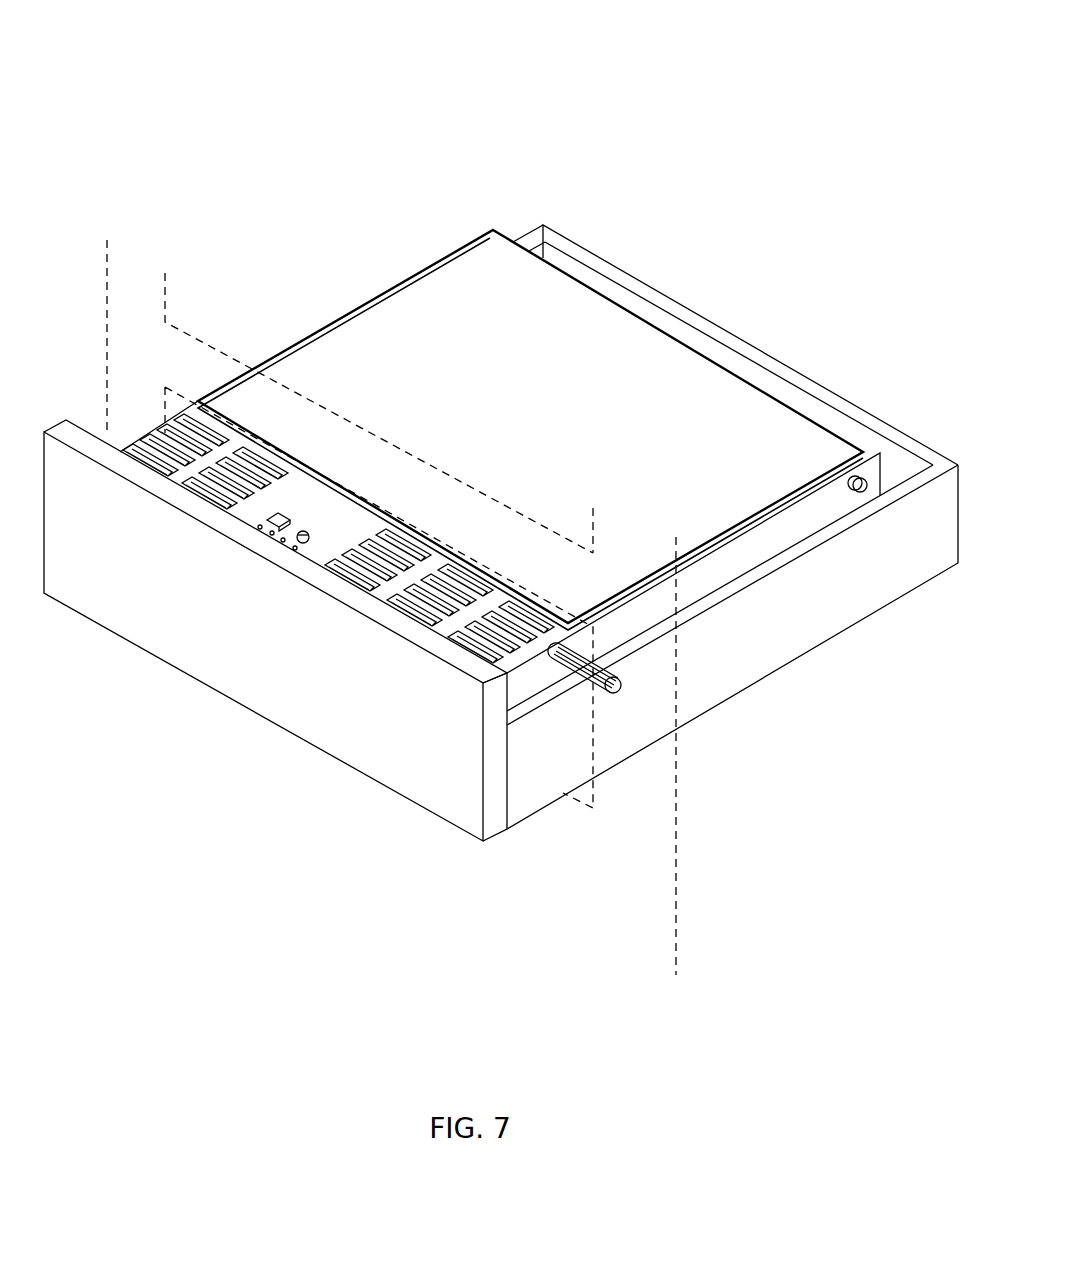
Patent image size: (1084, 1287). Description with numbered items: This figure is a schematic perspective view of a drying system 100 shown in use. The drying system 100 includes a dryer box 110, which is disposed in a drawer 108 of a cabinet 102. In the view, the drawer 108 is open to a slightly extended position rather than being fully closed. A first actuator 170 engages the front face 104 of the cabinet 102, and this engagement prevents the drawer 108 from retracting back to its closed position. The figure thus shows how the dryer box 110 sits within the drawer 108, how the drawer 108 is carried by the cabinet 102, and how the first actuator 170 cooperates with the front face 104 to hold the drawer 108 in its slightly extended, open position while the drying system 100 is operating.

The drying system 100 is at (270, 145).
The cabinet 102 is at (678, 865).
The front face 104 is at (632, 803).
The drawer 108 is at (750, 646).
The dryer box 110 is at (622, 366).
The first actuator 170 is at (603, 667).